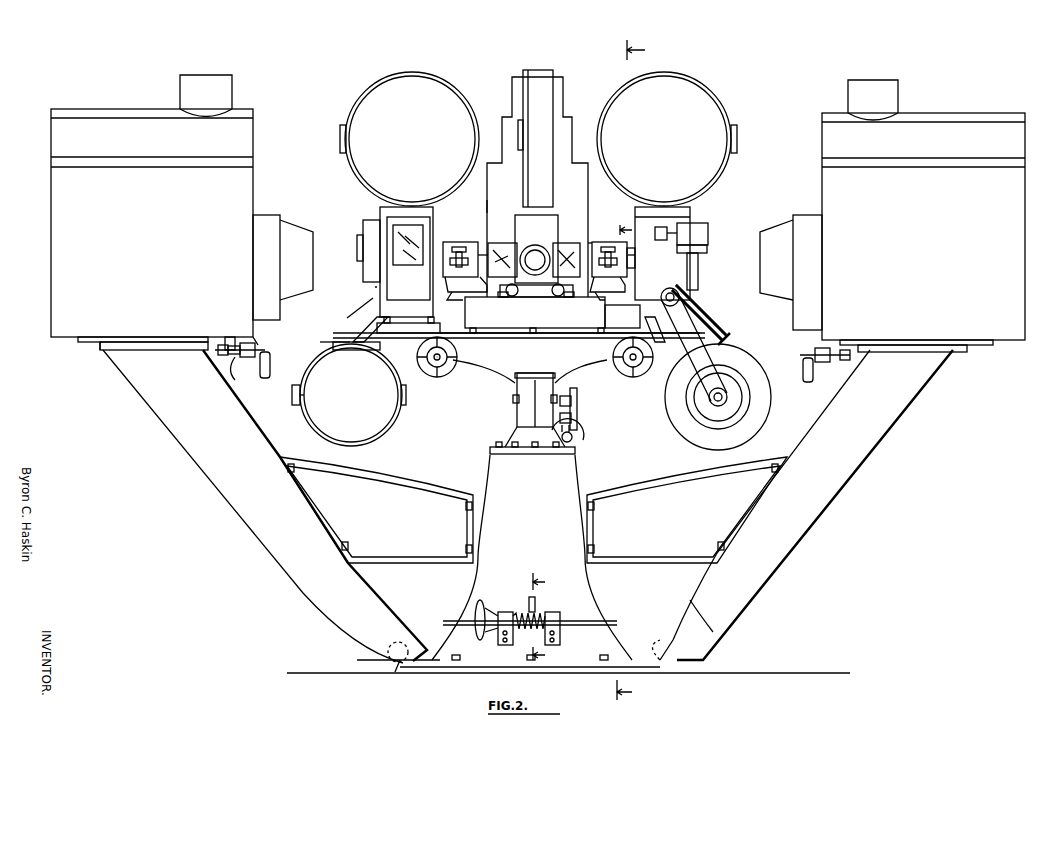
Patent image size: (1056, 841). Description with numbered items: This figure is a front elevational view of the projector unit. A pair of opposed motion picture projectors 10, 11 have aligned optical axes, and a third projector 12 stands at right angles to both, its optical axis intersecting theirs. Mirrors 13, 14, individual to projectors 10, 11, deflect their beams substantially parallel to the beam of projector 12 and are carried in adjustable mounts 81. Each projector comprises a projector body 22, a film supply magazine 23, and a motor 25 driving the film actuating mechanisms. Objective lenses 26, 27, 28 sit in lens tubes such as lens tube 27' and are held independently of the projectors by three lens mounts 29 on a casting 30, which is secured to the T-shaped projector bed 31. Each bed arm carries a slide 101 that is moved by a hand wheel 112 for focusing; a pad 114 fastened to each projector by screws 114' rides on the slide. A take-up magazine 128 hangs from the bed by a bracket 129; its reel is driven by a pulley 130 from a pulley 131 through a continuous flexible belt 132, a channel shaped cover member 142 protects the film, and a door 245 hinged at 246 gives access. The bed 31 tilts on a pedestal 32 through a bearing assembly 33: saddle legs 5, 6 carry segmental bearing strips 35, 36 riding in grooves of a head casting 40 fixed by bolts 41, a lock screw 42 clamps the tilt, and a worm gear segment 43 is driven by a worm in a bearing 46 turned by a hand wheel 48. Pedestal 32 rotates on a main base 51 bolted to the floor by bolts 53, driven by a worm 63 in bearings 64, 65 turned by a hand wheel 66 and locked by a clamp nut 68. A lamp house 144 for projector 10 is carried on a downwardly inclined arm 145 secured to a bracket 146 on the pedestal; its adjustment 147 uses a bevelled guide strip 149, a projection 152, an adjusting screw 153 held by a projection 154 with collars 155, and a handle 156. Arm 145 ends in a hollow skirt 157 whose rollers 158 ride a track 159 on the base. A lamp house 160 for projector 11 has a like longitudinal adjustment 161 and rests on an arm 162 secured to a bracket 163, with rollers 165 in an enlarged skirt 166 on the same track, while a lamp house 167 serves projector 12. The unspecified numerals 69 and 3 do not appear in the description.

The lamp house 144 is at (176, 246).
The lamp house 160 is at (921, 239).
The film supply magazine 23 is at (448, 114).
The third projector 12 is at (504, 235).
The lamp house 167 is at (500, 193).
The projector body 22 is at (433, 232).
The motor 25 is at (372, 226).
The objective lens 28 is at (536, 248).
The objective lens 26 is at (430, 270).
The objective lens 27 is at (566, 260).
The lens tube 27' is at (644, 258).
The mirror 14 is at (585, 243).
The lens mount 29 is at (460, 238).
The mirror 13 is at (479, 235).
The motion picture projector 11 is at (720, 268).
The casting 30 is at (540, 325).
The adjustable mount 81 is at (508, 296).
The support bracket 69 is at (449, 293).
The projector bed 31 is at (571, 356).
The slide 101 is at (626, 336).
The pad 114 is at (499, 337).
The screws 114' is at (481, 304).
The motion picture projector 10 is at (373, 291).
The channel shaped cover member 142 is at (352, 345).
The hand wheel 112 is at (424, 373).
The segmental bearing strip 35 is at (515, 373).
The head casting 40 is at (526, 388).
The segmental bearing strip 36 is at (514, 400).
The saddle leg 5 is at (516, 415).
The saddle leg 6 is at (551, 413).
The bolts 41 is at (495, 445).
The bearing assembly 33 is at (578, 393).
The lock screw 42 is at (578, 402).
The worm gear segment 43 is at (578, 417).
The hand wheel 48 is at (573, 437).
The bearing 46 is at (580, 446).
The pedestal 32 is at (578, 481).
The take-up magazine 128 is at (750, 368).
The bracket 129 is at (738, 362).
The pulley 130 is at (712, 410).
The pulley 131 is at (664, 294).
The continuous flexible belt 132 is at (712, 322).
The hinge 246 is at (294, 397).
The door 245 is at (309, 409).
The adjustment 147 is at (254, 371).
The collars 155 is at (242, 345).
The projection 154 is at (260, 341).
The handle 156 is at (268, 364).
The projection 152 is at (226, 352).
The adjusting screw 153 is at (232, 362).
The bevelled guide strip 149 is at (100, 351).
The longitudinal adjustment 161 is at (848, 371).
The downwardly inclined arm 145 is at (161, 417).
The hollow skirt 157 is at (348, 646).
The roller 158 is at (412, 641).
The track 159 is at (436, 670).
The arm 162 is at (843, 495).
The bracket 146 is at (393, 480).
The bracket 163 is at (688, 481).
The roller 165 is at (694, 602).
The enlarged skirt 166 is at (708, 659).
The main base 51 is at (618, 626).
The bolts 53 is at (610, 668).
The hand wheel 66 is at (475, 610).
The bearing 64 is at (505, 614).
The bearing 65 is at (558, 614).
The worm 63 is at (561, 625).
The clamp nut 68 is at (530, 596).
The section line 3 is at (637, 370).